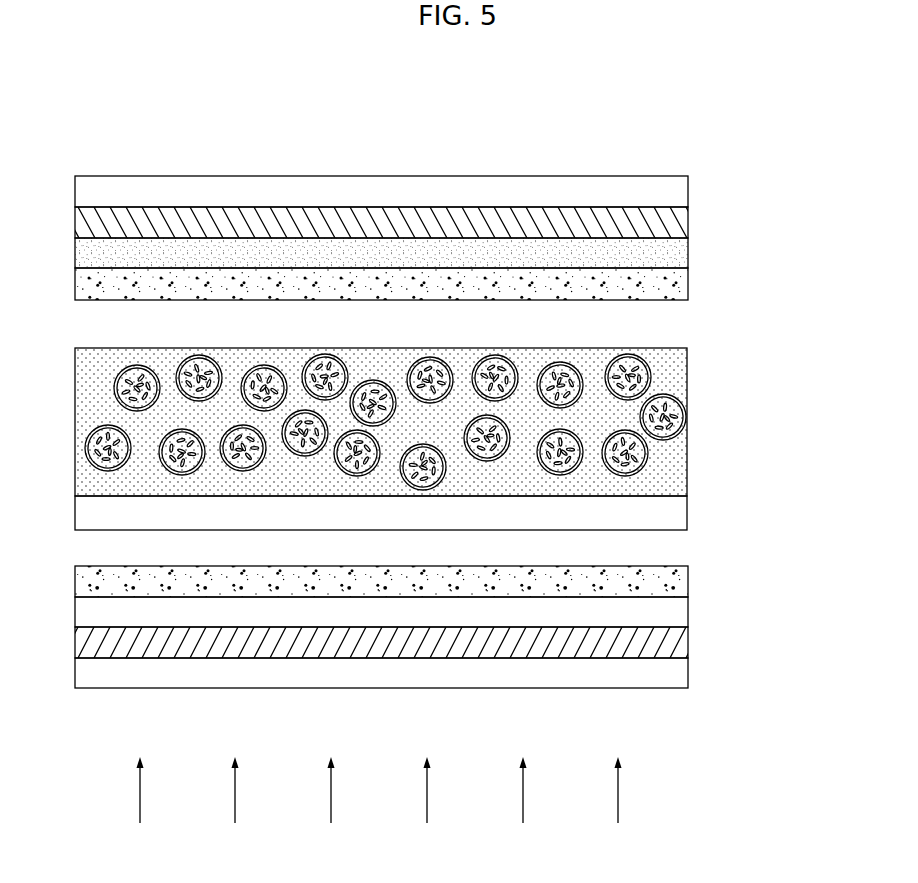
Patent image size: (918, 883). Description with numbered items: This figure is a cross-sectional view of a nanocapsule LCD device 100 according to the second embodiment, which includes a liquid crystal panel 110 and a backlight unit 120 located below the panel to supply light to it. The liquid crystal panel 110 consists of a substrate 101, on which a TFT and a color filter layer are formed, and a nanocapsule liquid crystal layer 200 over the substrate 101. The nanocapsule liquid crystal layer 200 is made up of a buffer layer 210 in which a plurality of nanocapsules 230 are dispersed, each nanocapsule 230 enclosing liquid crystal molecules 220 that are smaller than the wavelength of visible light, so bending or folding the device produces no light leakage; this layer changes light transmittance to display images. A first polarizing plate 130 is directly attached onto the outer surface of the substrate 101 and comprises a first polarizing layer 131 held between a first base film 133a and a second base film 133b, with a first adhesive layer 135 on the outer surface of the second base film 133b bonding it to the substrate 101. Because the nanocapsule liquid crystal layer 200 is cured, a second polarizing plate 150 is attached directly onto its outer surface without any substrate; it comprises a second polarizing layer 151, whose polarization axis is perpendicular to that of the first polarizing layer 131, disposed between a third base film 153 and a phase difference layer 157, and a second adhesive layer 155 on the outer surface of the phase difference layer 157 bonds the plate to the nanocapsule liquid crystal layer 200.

The nanocapsule LCD device 100 is at (688, 97).
The liquid crystal panel 110 is at (718, 358).
The substrate 101 is at (680, 517).
The nanocapsule liquid crystal layer 200 is at (770, 395).
The buffer layer 210 is at (680, 452).
The liquid crystal molecules 220 is at (688, 416).
The nanocapsule 230 is at (687, 400).
The second polarizing plate 150 is at (777, 185).
The third base film 153 is at (688, 191).
The second polarizing layer 151 is at (688, 216).
The phase difference layer 157 is at (688, 246).
The second adhesive layer 155 is at (688, 278).
The first polarizing plate 130 is at (780, 577).
The first adhesive layer 135 is at (688, 574).
The second base film 133b is at (680, 617).
The first polarizing layer 131 is at (683, 643).
The first base film 133a is at (680, 672).
The backlight unit 120 is at (379, 805).